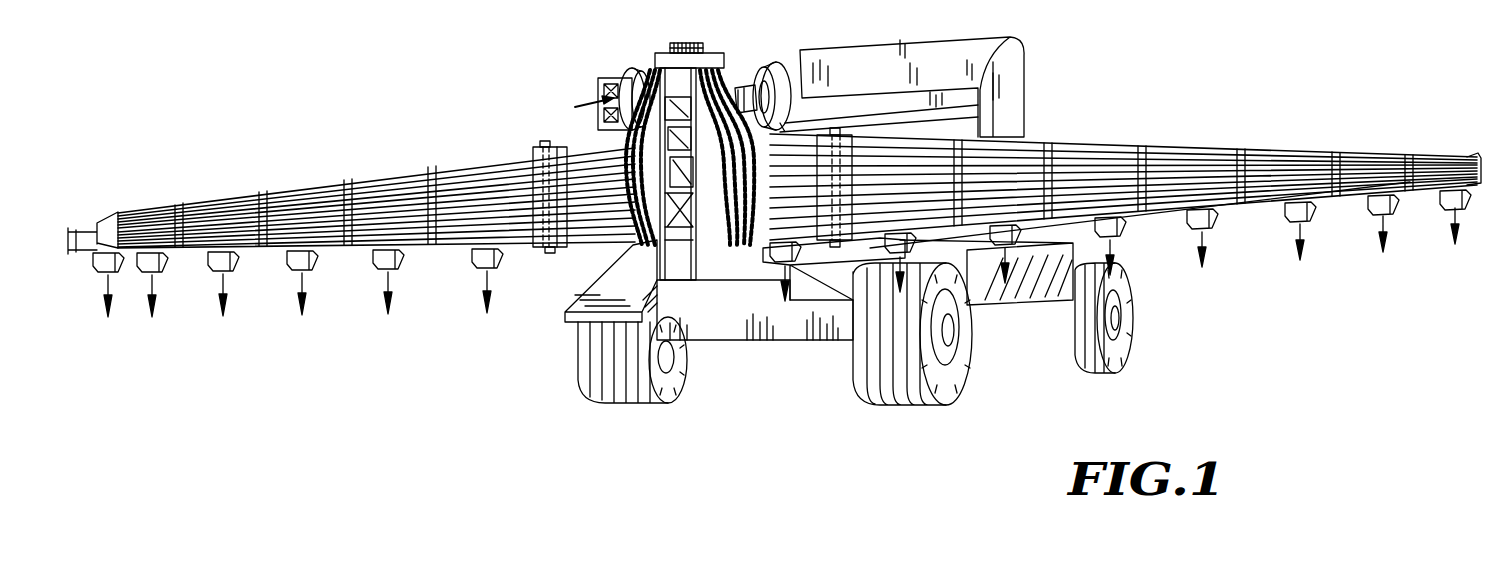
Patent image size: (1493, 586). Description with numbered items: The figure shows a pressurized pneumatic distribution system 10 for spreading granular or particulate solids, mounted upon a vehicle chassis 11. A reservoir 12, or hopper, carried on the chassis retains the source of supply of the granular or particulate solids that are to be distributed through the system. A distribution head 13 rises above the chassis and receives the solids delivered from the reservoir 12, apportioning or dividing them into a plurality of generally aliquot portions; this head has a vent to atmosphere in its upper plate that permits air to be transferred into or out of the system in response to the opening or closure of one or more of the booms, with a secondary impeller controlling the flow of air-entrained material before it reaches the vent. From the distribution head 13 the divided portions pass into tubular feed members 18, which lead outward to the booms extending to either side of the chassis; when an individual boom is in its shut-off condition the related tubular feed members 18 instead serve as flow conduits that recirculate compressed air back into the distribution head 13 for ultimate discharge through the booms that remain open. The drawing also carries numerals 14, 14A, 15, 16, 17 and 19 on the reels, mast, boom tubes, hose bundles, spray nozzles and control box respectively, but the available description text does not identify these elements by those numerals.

The pressurized pneumatic distribution system 10 is at (1133, 104).
The vehicle chassis 11 is at (1043, 307).
The reservoir 12 is at (987, 120).
The distribution head 13 is at (710, 58).
The hose reels 14 is at (640, 70).
The mast 14A is at (733, 232).
The boom tubes 15 is at (447, 193).
The hose bundles 16 is at (648, 232).
The spray nozzles 17 is at (160, 258).
The tubular feed member 18 is at (735, 280).
The control box 19 is at (600, 84).